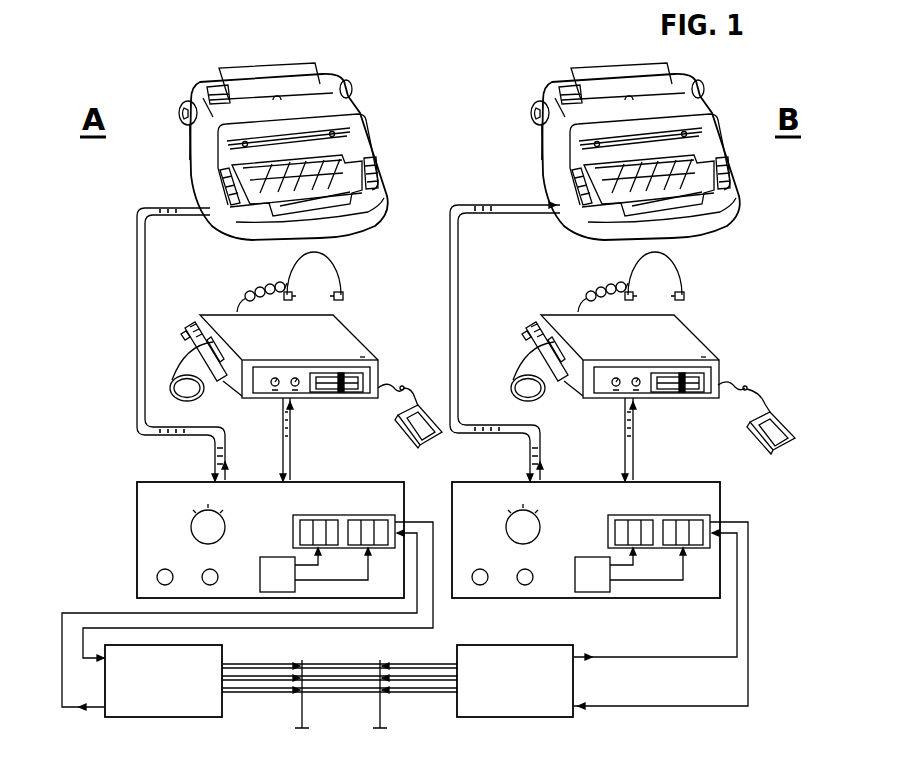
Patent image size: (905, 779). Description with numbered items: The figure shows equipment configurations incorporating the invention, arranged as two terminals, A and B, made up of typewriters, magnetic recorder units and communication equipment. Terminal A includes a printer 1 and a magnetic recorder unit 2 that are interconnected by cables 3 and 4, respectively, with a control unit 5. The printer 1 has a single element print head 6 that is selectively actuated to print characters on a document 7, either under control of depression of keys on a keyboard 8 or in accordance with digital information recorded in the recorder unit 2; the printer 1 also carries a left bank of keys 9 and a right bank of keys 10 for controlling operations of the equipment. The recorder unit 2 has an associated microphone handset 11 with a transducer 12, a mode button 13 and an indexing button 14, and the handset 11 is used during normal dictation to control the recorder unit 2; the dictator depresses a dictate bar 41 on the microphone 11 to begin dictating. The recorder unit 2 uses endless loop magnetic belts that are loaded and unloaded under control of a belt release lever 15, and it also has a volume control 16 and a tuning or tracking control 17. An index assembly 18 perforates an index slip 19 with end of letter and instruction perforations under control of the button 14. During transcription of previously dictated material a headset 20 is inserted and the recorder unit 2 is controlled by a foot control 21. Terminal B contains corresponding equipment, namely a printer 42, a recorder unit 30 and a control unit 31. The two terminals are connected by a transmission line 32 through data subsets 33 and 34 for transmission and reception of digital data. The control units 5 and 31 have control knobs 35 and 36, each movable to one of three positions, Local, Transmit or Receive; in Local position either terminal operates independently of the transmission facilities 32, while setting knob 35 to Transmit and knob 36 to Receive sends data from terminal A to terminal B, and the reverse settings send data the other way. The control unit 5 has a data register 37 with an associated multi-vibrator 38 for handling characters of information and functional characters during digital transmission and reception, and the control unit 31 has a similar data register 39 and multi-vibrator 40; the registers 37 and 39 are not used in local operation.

The printer 1 is at (355, 102).
The magnetic recorder unit 2 is at (360, 333).
The cable 3 is at (145, 272).
The cable 4 is at (291, 436).
The control unit 5 is at (317, 480).
The single element print head 6 is at (278, 100).
The document 7 is at (282, 63).
The keyboard 8 is at (353, 193).
The left bank of keys 9 is at (225, 160).
The right bank of keys 10 is at (368, 151).
The microphone handset 11 is at (186, 323).
The transducer 12 is at (193, 324).
The mode button 13 is at (210, 325).
The indexing button 14 is at (190, 349).
The belt release lever 15 is at (313, 368).
The volume control 16 is at (273, 386).
The tuning or tracking control 17 is at (297, 378).
The index assembly 18 is at (347, 392).
The index slip 19 is at (360, 373).
The headset 20 is at (337, 277).
The foot control 21 is at (418, 405).
The recorder unit 30 is at (697, 347).
The control unit 31 is at (657, 480).
The transmission line 32 is at (323, 667).
The data subset 33 is at (207, 708).
The data subset 34 is at (455, 708).
The control knob 35 is at (225, 523).
The control knob 36 is at (540, 523).
The data register 37 is at (306, 515).
The multi-vibrator 38 is at (263, 557).
The data register 39 is at (621, 515).
The multi-vibrator 40 is at (581, 557).
The dictate bar 41 is at (214, 347).
The printer 42 is at (710, 108).